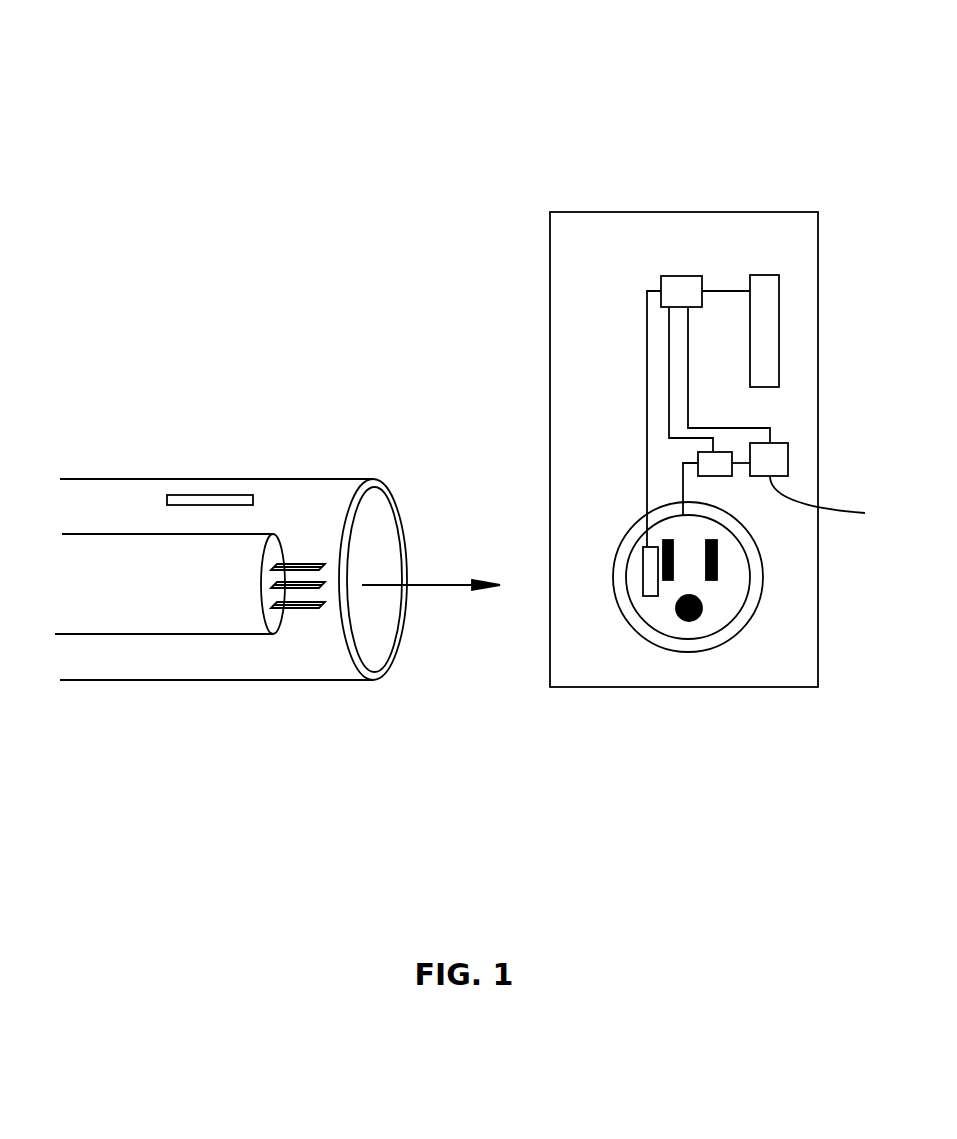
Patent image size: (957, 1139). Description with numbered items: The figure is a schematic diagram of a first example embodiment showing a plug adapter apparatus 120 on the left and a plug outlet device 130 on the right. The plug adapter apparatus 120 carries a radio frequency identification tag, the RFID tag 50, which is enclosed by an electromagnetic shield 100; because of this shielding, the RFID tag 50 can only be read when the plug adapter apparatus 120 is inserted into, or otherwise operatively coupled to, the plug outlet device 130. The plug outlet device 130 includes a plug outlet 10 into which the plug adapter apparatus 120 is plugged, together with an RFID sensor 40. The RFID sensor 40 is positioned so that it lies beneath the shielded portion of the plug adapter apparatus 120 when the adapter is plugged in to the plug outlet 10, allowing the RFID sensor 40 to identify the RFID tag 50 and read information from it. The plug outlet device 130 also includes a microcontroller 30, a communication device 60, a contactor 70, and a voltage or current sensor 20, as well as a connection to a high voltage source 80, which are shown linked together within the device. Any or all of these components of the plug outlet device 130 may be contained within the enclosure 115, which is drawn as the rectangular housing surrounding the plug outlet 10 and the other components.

The plug outlet 10 is at (695, 617).
The voltage or current sensor 20 is at (770, 460).
The microcontroller 30 is at (673, 288).
The RFID sensor 40 is at (650, 570).
The RFID tag 50 is at (183, 495).
The communication device 60 is at (763, 285).
The contactor 70 is at (727, 473).
The high voltage source 80 is at (828, 508).
The electromagnetic shield 100 is at (260, 680).
The enclosure 115 is at (605, 687).
The plug adapter apparatus 120 is at (65, 238).
The plug outlet device 130 is at (854, 92).